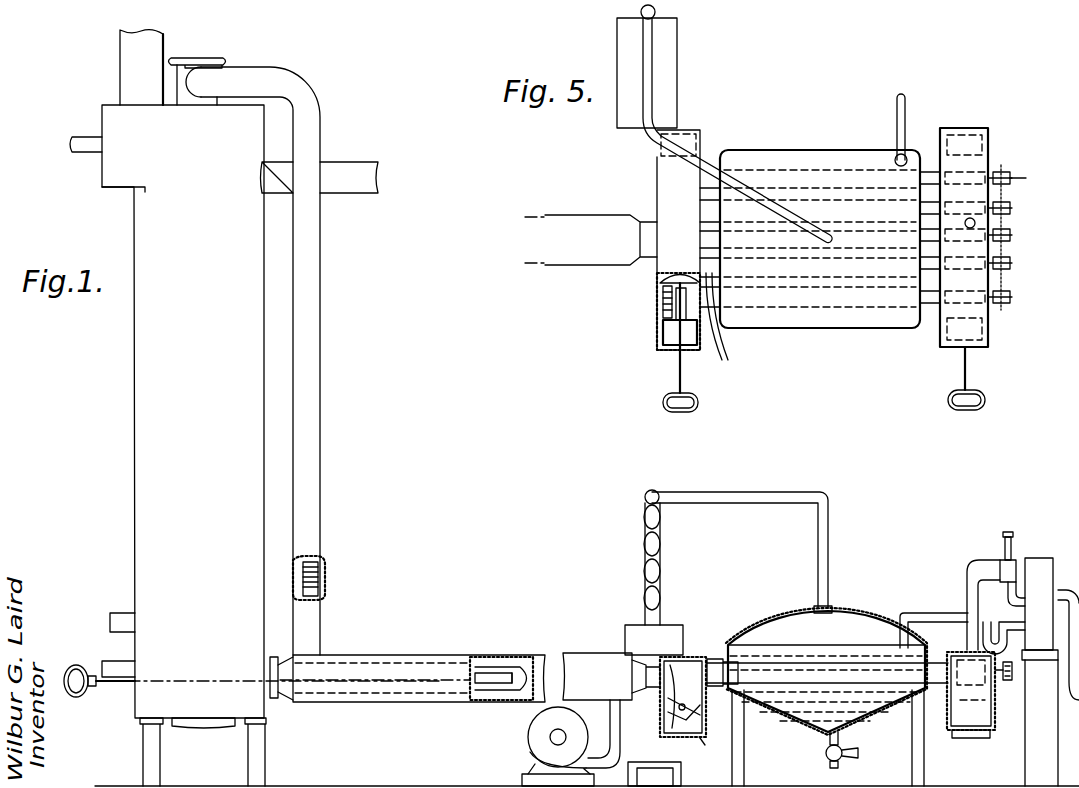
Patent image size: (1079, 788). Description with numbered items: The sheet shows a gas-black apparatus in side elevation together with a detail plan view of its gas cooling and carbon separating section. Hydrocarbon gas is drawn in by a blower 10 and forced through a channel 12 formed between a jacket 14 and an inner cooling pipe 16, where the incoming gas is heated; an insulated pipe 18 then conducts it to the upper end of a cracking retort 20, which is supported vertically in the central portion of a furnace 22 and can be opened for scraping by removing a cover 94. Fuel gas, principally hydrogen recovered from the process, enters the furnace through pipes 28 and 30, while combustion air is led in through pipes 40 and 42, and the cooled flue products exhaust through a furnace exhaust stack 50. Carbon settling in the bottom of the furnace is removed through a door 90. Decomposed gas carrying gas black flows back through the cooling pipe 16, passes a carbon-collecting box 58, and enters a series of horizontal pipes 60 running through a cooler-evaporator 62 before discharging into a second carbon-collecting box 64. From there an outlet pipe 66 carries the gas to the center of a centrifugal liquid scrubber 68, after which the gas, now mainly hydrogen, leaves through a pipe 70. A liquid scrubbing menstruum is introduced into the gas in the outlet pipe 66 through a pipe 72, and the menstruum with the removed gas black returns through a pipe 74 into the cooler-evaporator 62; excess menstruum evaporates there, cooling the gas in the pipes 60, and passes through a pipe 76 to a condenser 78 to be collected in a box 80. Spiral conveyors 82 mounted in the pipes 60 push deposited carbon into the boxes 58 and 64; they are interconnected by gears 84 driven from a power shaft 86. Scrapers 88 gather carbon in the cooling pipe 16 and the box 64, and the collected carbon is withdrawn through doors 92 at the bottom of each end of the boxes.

In FIG. 1, the blower 10 is at (530, 742).
In FIG. 1, the channel 12 is at (496, 660).
In FIG. 1, the jacket 14 is at (466, 655).
In FIG. 5, the jacket 14 is at (573, 266).
In FIG. 1, the inner cooling pipe 16 is at (277, 700).
In FIG. 1, the insulated pipe 18 is at (323, 573).
In FIG. 1, the cracking retort 20 is at (188, 66).
In FIG. 1, the furnace 22 is at (142, 353).
In FIG. 1, the pipe 28 is at (108, 662).
In FIG. 1, the pipe 30 is at (130, 613).
In FIG. 1, the pipe 40 is at (80, 152).
In FIG. 1, the pipe 42 is at (340, 164).
In FIG. 1, the furnace exhaust stack 50 is at (122, 70).
In FIG. 1, the carbon-collecting box 58 is at (686, 657).
In FIG. 5, the carbon-collecting box 58 is at (656, 338).
In FIG. 1, the pipes 60 is at (716, 662).
In FIG. 5, the pipes 60 is at (928, 160).
In FIG. 1, the cooler-evaporator 62 is at (858, 616).
In FIG. 5, the cooler-evaporator 62 is at (895, 329).
In FIG. 1, the second carbon-collecting box 64 is at (995, 702).
In FIG. 5, the second carbon-collecting box 64 is at (990, 318).
In FIG. 1, the outlet pipe 66 is at (967, 580).
In FIG. 5, the outlet pipe 66 is at (975, 223).
In FIG. 1, the centrifugal liquid scrubber 68 is at (1042, 562).
In FIG. 1, the pipe 70 is at (1071, 706).
In FIG. 1, the pipe 72 is at (1013, 536).
In FIG. 1, the pipe 74 is at (920, 617).
In FIG. 5, the pipe 74 is at (897, 118).
In FIG. 1, the pipe 76 is at (758, 493).
In FIG. 5, the pipe 76 is at (740, 180).
In FIG. 1, the condenser 78 is at (665, 546).
In FIG. 5, the condenser 78 is at (654, 84).
In FIG. 1, the box 80 is at (640, 625).
In FIG. 5, the box 80 is at (678, 50).
In FIG. 1, the spiral conveyors 82 is at (718, 688).
In FIG. 1, the gears 84 is at (1012, 680).
In FIG. 5, the gears 84 is at (1006, 300).
In FIG. 5, the power shaft 86 is at (1018, 184).
In FIG. 1, the scrapers 88 is at (506, 690).
In FIG. 5, the scrapers 88 is at (672, 298).
In FIG. 1, the door 90 is at (187, 727).
In FIG. 1, the doors 92 is at (985, 745).
In FIG. 5, the doors 92 is at (696, 135).
In FIG. 1, the cover 94 is at (183, 57).